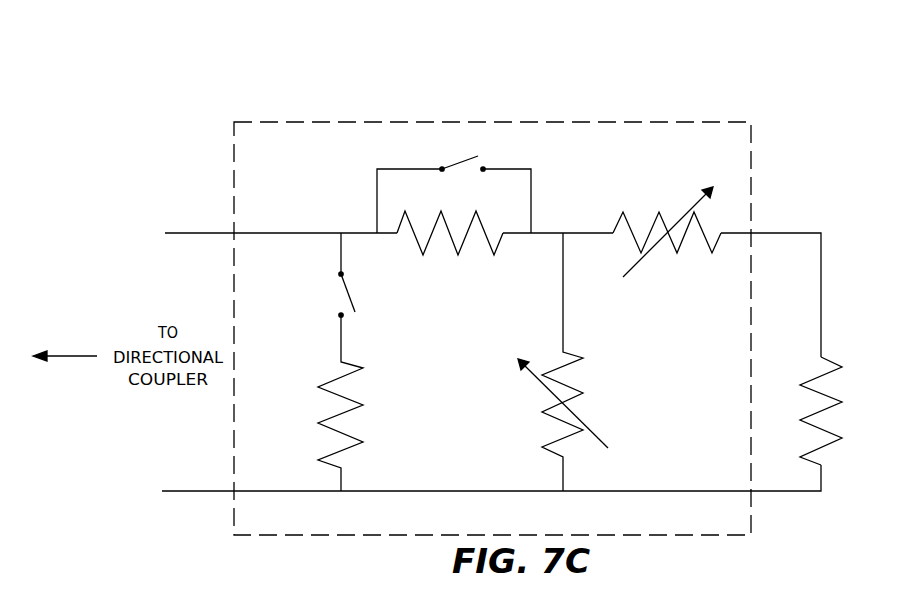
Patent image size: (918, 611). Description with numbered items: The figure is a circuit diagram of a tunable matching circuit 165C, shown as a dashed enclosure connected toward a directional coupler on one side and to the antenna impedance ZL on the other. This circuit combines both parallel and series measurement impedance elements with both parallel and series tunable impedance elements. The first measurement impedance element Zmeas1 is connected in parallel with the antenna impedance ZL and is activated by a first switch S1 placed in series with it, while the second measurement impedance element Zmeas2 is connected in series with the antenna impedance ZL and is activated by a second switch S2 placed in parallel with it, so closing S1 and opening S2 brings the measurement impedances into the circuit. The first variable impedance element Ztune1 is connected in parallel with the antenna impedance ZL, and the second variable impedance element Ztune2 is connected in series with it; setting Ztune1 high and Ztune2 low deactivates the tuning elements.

The tunable matching circuit 165C is at (632, 122).
The first switch S1 is at (331, 275).
The second switch S2 is at (454, 183).
The first measurement impedance element Zmeas1 is at (310, 403).
The second measurement impedance element Zmeas2 is at (450, 246).
The first variable impedance element Ztune1 is at (584, 362).
The second variable impedance element Ztune2 is at (667, 222).
The antenna impedance ZL is at (843, 411).